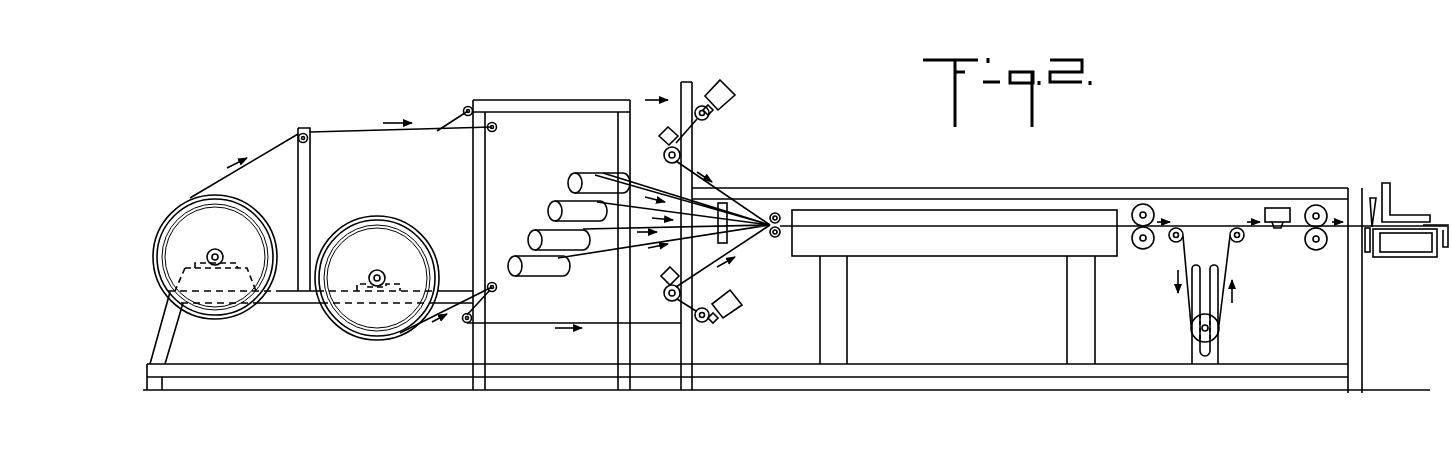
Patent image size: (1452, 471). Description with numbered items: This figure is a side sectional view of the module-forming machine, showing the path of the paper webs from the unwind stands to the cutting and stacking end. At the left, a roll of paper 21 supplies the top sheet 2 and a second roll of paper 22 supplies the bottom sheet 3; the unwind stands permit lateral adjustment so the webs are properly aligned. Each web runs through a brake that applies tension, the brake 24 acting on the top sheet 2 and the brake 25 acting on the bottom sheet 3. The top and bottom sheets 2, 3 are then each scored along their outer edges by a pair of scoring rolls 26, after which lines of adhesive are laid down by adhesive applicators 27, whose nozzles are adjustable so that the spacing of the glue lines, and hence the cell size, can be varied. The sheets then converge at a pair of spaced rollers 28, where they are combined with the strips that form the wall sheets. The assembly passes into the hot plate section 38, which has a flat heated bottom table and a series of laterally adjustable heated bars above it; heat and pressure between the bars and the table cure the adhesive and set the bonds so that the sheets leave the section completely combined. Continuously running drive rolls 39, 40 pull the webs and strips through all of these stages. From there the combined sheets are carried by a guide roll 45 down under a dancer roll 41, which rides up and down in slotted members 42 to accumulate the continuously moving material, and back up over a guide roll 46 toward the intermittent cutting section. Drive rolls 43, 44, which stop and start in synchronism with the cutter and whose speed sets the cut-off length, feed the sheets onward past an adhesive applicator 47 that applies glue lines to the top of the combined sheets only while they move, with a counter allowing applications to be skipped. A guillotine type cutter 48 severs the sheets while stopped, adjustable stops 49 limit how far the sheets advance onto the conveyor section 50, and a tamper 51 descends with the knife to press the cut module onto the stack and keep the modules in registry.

The top sheet 2 is at (352, 131).
The bottom sheet 3 is at (515, 323).
The roll of paper 21 is at (187, 213).
The roll of paper 22 is at (376, 242).
The brake 24 is at (465, 107).
The brake 25 is at (497, 288).
The scoring rolls 26 is at (733, 100).
The adhesive applicators 27 is at (666, 131).
The spaced rollers 28 is at (777, 212).
The hot plate section 38 is at (933, 259).
The drive roll 39 is at (1143, 203).
The drive roll 40 is at (1138, 249).
The dancer roll 41 is at (1220, 330).
The slotted members 42 is at (1196, 300).
The drive roll 43 is at (1316, 204).
The drive roll 44 is at (1318, 250).
The guide roll 45 is at (1174, 242).
The guide roll 46 is at (1240, 241).
The adhesive applicator 47 is at (1277, 207).
The guillotine type cutter 48 is at (1371, 197).
The adjustable stops 49 is at (1440, 225).
The conveyor section 50 is at (1408, 260).
The tamper 51 is at (1391, 196).